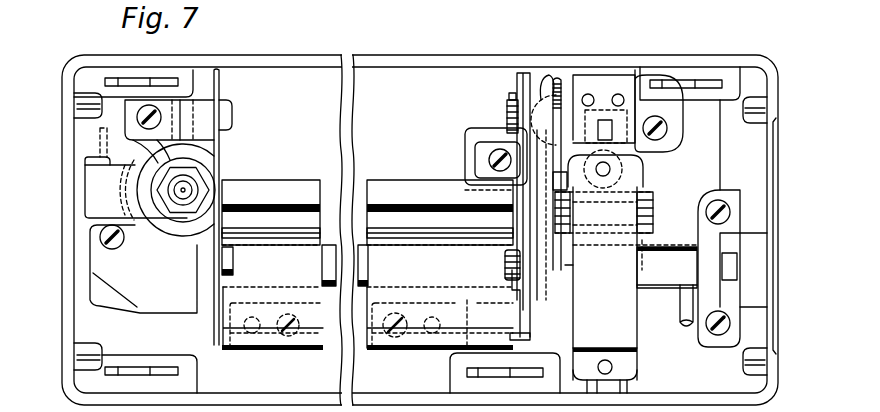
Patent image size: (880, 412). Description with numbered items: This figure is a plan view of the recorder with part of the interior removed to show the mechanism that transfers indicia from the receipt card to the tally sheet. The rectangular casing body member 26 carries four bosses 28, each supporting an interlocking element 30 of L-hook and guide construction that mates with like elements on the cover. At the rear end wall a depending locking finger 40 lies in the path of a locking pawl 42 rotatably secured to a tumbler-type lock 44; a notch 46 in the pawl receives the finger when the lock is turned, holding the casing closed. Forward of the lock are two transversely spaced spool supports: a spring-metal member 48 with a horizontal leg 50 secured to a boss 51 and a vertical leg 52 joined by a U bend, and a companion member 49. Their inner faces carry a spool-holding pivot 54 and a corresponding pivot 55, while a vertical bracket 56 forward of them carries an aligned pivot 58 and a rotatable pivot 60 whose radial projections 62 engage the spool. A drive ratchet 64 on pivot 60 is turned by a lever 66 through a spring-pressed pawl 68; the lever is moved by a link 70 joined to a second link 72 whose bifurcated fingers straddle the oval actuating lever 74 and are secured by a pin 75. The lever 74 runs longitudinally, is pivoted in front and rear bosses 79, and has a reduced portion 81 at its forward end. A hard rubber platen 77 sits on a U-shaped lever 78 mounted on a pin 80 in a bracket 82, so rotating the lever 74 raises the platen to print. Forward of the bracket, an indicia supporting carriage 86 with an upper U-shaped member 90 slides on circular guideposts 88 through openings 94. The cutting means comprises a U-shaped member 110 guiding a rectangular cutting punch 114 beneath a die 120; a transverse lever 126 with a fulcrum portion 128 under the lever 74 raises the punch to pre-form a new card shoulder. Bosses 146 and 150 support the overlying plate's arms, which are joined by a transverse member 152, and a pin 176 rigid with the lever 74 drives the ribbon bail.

The body member 26 is at (380, 63).
The boss 28 is at (92, 75).
The interlocking element 30 is at (130, 80).
The locking finger 40 is at (100, 141).
The locking pawl 42 is at (90, 196).
The tumbler-type lock 44 is at (185, 160).
The notch 46 is at (85, 168).
The spring metal member 48 is at (218, 345).
The spool support member 49 is at (211, 70).
The horizontal leg 50 is at (88, 265).
The boss 51 is at (138, 312).
The vertical leg 52 is at (222, 297).
The spool-holding pivot 54 is at (233, 262).
The pivot 55 is at (232, 107).
The bracket 56 is at (527, 72).
The pivot 58 is at (507, 260).
The pivot 60 is at (505, 118).
The radial projections 62 is at (508, 98).
The drive ratchet 64 is at (559, 78).
The lever 66 is at (549, 78).
The pawl 68 is at (557, 181).
The link 70 is at (562, 265).
The second link 72 is at (532, 305).
The actuating lever 74 is at (663, 252).
The pin 75 is at (512, 277).
The hard rubber platen 77 is at (378, 185).
The U-shaped lever 78 is at (394, 232).
The boss 79 is at (197, 313).
The pin 80 is at (424, 356).
The reduced portion 81 is at (735, 267).
The bracket 82 is at (306, 352).
The indicia supporting carriage 86 is at (628, 339).
The guidepost 88 is at (610, 170).
The upper U-shaped member 90 is at (582, 336).
The opening 94 is at (614, 371).
The U-shaped member 110 is at (642, 73).
The cutting punch 114 is at (593, 137).
The die 120 is at (582, 78).
The lever 126 is at (645, 184).
The U-shaped portion 128 is at (654, 210).
The boss 146 is at (84, 100).
The boss 150 is at (756, 102).
The transverse member 152 is at (757, 362).
The pin 176 is at (682, 309).